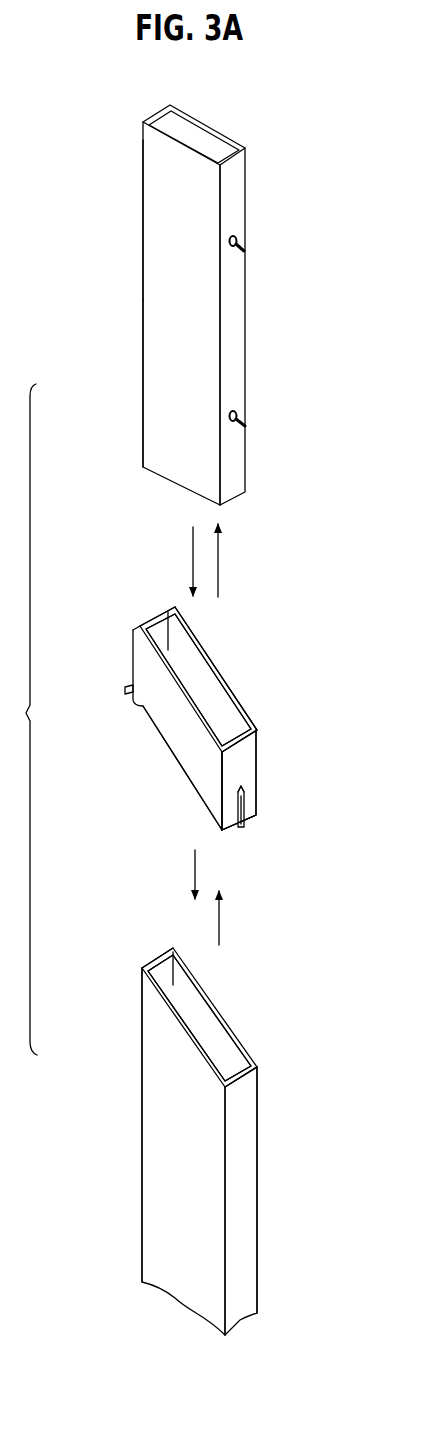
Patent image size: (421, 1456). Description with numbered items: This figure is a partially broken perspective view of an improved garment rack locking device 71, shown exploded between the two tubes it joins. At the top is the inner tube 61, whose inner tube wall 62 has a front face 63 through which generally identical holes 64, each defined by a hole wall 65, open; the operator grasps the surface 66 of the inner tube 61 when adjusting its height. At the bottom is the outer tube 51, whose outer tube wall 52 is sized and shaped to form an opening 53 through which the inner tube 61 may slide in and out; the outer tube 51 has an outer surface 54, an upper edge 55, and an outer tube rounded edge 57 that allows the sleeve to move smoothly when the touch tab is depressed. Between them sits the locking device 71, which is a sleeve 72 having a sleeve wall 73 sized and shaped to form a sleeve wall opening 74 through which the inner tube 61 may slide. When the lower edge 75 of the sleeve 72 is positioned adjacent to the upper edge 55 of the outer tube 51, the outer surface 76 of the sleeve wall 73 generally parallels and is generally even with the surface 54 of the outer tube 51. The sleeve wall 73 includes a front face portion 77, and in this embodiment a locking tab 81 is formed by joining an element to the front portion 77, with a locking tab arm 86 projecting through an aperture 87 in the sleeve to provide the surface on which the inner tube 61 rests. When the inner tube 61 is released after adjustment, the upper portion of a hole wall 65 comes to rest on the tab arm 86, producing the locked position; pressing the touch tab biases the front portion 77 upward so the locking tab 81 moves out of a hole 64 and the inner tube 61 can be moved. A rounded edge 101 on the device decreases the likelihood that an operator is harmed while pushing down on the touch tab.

The outer tube 51 is at (280, 1224).
The outer tube wall 52 is at (153, 1018).
The opening 53 is at (215, 1017).
The outer surface of the outer tube 54 is at (248, 1127).
The upper edge of the outer tube 55 is at (248, 1045).
The outer tube rounded edge 57 is at (182, 944).
The inner tube 61 is at (262, 347).
The inner tube wall 62 is at (165, 310).
The front face 63 is at (233, 185).
The hole 64 is at (247, 252).
The hole wall 65 is at (241, 244).
The surface of the inner tube 66 is at (168, 258).
The locking device 71 is at (274, 753).
The sleeve 72 is at (243, 683).
The sleeve wall 73 is at (177, 733).
The sleeve wall opening 74 is at (200, 662).
The lower edge of the sleeve 75 is at (233, 833).
The outer surface of the sleeve wall 76 is at (250, 768).
The front face portion 77 is at (247, 747).
The locking tab 81 is at (246, 828).
The locking tab arm 86 is at (246, 787).
The aperture 87 is at (221, 788).
The rounded edge 101 is at (176, 604).